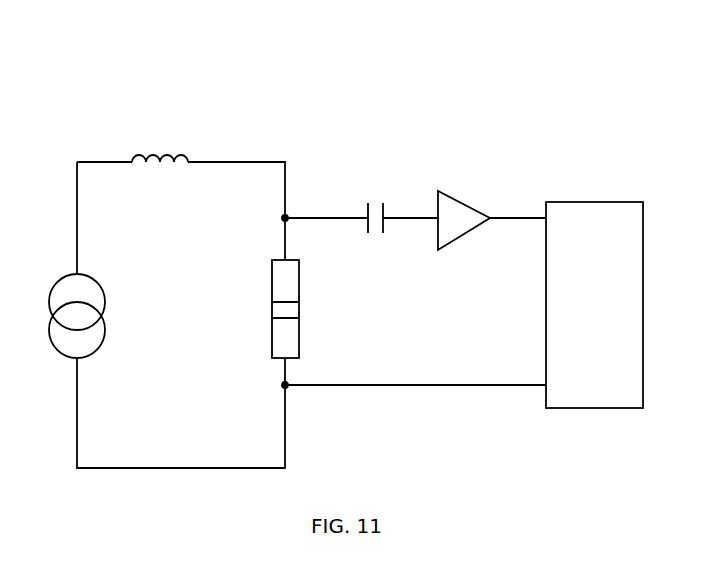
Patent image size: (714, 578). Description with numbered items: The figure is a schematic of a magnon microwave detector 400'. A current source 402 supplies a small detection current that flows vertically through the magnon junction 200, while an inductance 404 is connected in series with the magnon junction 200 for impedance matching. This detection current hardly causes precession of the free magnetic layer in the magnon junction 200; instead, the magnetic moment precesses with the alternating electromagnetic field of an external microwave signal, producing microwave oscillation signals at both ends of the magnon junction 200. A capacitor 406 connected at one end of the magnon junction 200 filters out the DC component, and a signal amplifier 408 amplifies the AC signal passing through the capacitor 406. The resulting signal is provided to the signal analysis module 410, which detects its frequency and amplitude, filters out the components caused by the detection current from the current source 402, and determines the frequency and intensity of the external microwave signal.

The magnon microwave detector 400' is at (346, 261).
The current source 402 is at (108, 316).
The inductance 404 is at (160, 184).
The magnon junction 200 is at (317, 309).
The capacitor 406 is at (377, 238).
The signal amplifier 408 is at (465, 242).
The signal analysis module 410 is at (594, 305).